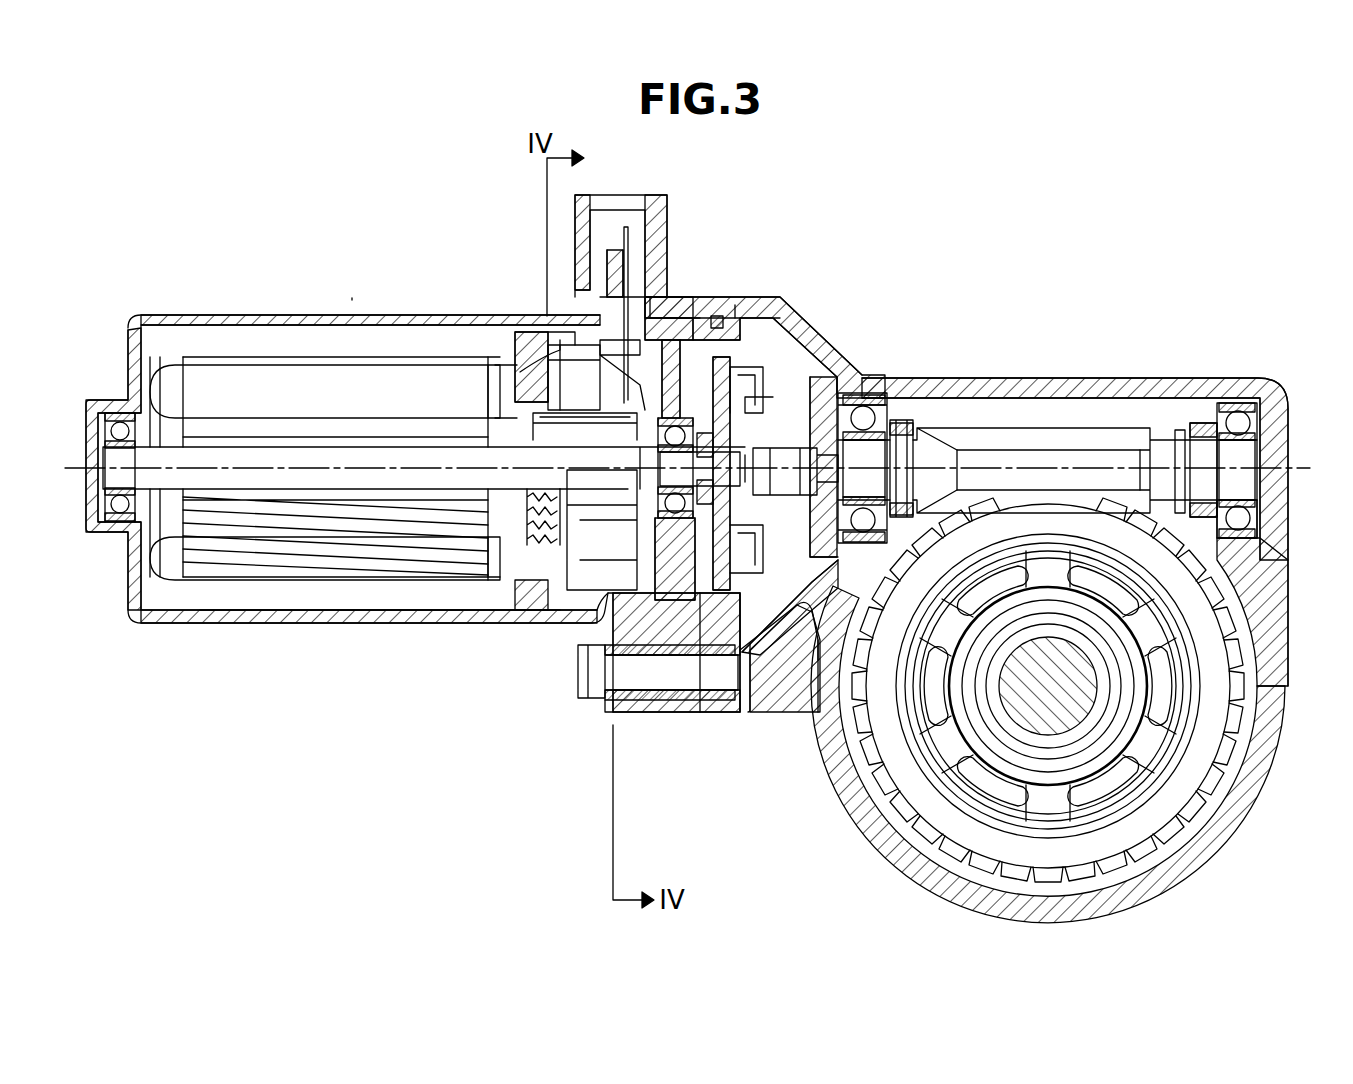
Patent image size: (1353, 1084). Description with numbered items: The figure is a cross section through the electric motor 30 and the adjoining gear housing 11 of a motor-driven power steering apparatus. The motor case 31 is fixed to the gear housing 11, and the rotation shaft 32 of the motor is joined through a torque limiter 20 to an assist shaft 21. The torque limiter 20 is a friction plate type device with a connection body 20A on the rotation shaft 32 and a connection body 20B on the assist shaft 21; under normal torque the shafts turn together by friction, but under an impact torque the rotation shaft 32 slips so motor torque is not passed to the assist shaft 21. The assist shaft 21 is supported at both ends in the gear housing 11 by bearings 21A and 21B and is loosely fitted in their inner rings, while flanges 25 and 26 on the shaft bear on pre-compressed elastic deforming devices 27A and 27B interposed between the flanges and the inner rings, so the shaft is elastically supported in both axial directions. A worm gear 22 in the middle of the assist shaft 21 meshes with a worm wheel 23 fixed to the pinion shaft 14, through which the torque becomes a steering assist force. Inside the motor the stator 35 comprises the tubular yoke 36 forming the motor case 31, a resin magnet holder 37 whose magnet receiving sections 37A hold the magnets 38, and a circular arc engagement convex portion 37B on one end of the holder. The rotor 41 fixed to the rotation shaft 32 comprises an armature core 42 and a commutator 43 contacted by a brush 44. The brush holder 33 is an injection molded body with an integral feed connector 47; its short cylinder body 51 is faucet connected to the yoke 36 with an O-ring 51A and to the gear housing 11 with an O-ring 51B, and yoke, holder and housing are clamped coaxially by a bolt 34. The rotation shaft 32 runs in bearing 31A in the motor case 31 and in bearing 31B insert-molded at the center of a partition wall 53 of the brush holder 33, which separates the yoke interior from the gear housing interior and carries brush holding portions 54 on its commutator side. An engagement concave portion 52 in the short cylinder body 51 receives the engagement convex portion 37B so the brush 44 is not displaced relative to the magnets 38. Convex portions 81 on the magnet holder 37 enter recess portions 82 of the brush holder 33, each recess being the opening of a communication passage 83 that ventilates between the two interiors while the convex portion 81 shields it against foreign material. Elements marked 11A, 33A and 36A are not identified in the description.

The gear housing 11 is at (790, 345).
The flange of gear housing 11A is at (710, 712).
The pinion shaft 14 is at (1035, 720).
The torque limiter 20 is at (801, 407).
The connection body 20A is at (702, 712).
The connection body 20B is at (740, 660).
The assist shaft 21 is at (975, 428).
The bearing 21A is at (818, 660).
The bearing 21B is at (1240, 538).
The worm gear 22 is at (1097, 428).
The worm wheel 23 is at (888, 812).
The flange 25 is at (905, 423).
The flange 26 is at (1180, 430).
The elastic deforming device 27A is at (868, 398).
The elastic deforming device 27B is at (1238, 405).
The electric motor 30 is at (355, 288).
The motor case 31 is at (275, 623).
The bearing 31A is at (115, 413).
The bearing 31B is at (600, 620).
The rotation shaft 32 is at (288, 425).
The brush holder 33 is at (686, 297).
The end frame flange 33A is at (662, 712).
The bolt 34 is at (585, 698).
The stator 35 is at (380, 345).
The tubular yoke 36 is at (334, 623).
The yoke flange portion 36A is at (607, 712).
The magnet holder 37 is at (550, 345).
The magnet receiving sections 37A is at (540, 330).
The engagement convex portion 37B is at (565, 345).
The magnets 38 is at (522, 340).
The rotor 41 is at (235, 556).
The armature core 42 is at (215, 378).
The commutator 43 is at (588, 500).
The brush 44 is at (620, 548).
The feed connector 47 is at (655, 197).
The short cylinder body 51 is at (688, 289).
The O-ring 51A is at (622, 262).
The O-ring 51B is at (735, 310).
The engagement concave portion 52 is at (520, 372).
The partition wall 53 is at (785, 395).
The brush holding portions 54 is at (560, 530).
The convex portions 81 is at (628, 228).
The recess portions 82 is at (612, 340).
The communication passage 83 is at (722, 312).